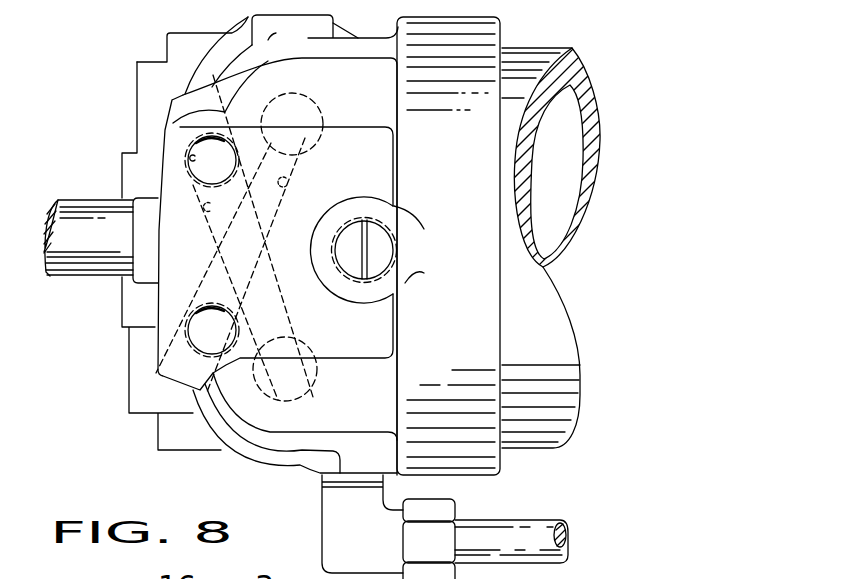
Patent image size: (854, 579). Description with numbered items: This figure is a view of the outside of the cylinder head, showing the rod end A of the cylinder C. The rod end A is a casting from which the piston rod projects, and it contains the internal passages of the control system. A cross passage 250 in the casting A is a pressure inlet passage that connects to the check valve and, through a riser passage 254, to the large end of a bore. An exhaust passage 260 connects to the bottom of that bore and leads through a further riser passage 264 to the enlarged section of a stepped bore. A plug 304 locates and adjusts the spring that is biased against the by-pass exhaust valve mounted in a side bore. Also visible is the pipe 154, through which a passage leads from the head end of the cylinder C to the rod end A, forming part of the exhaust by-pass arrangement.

The rod end A is at (187, 40).
The cylinder C is at (568, 347).
The pipe 154 is at (542, 537).
The cross passage 250 is at (295, 178).
The riser passage 254 is at (186, 322).
The exhaust passage 260 is at (209, 212).
The riser passage 264 is at (186, 158).
The plug 304 is at (377, 263).